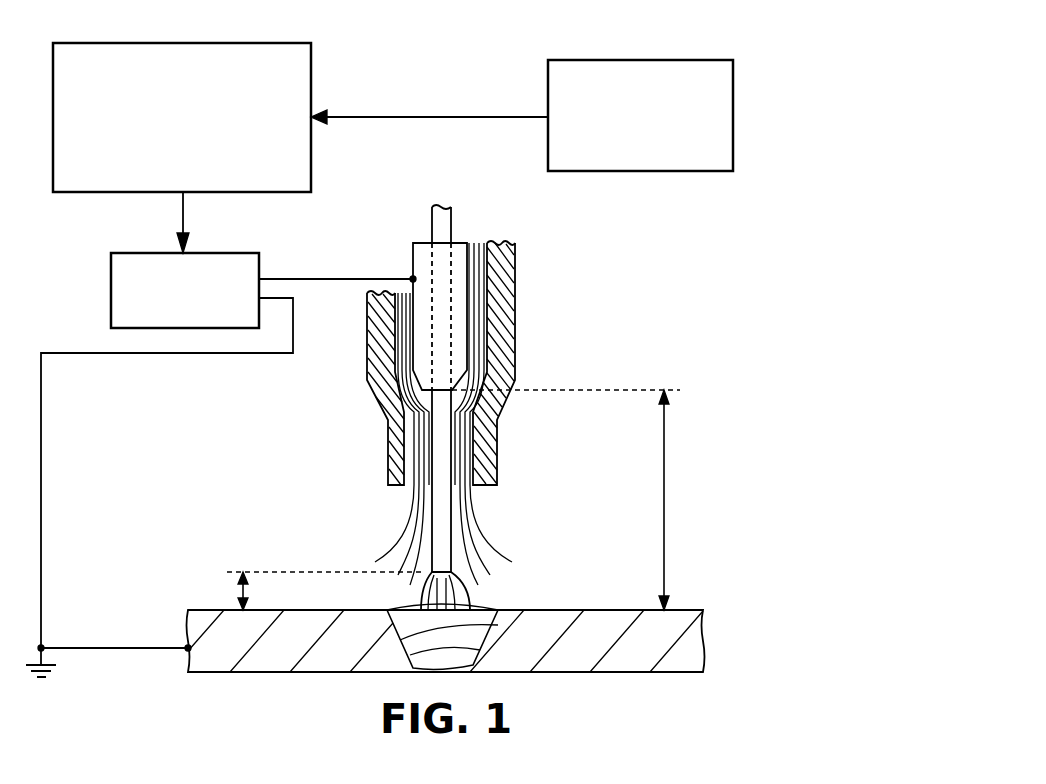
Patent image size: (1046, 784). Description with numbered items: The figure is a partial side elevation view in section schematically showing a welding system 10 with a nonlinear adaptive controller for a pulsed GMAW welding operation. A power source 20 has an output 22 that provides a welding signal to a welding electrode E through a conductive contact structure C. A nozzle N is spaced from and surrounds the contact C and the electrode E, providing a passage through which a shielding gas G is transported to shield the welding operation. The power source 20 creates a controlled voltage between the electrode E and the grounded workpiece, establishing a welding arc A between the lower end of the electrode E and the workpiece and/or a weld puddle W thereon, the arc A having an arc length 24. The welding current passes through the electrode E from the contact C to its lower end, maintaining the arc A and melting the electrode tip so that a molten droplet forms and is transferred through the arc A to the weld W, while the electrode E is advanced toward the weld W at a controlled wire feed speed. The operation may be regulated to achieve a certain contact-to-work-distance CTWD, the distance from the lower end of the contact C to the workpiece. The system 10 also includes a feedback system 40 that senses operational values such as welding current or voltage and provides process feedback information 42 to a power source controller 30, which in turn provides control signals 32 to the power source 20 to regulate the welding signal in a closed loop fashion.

The welding system 10 is at (814, 124).
The power source 20 is at (111, 290).
The output 22 is at (270, 279).
The arc length 24 is at (240, 591).
The power source controller 30 is at (178, 43).
The control signals 32 is at (181, 217).
The feedback system 40 is at (632, 60).
The process feedback information 42 is at (430, 117).
The welding electrode E is at (431, 220).
The conductive contact structure C is at (413, 251).
The nozzle N is at (515, 311).
The shielding gas G is at (494, 530).
The welding arc A is at (486, 587).
The weld puddle W is at (410, 610).
The contact-to-work-distance CTWD is at (664, 453).